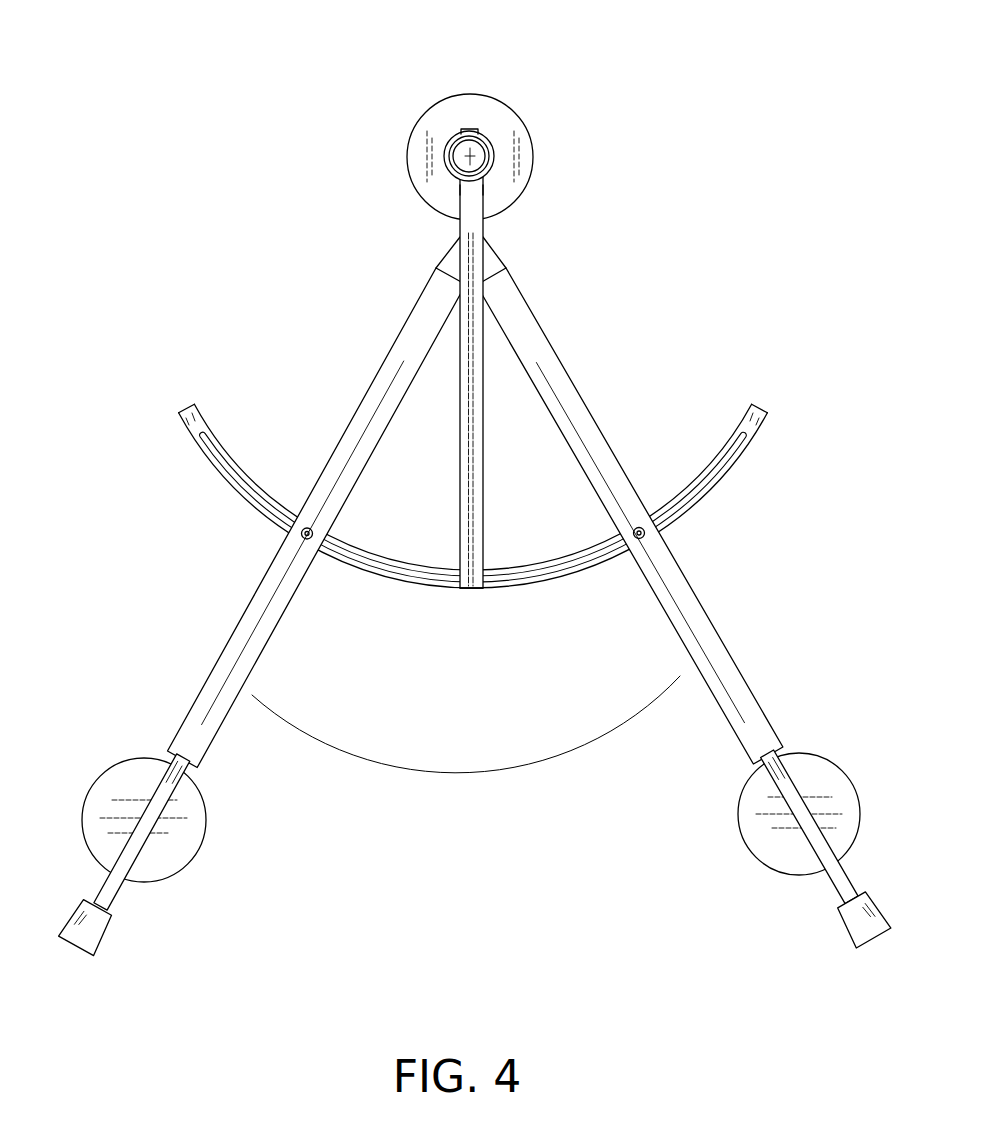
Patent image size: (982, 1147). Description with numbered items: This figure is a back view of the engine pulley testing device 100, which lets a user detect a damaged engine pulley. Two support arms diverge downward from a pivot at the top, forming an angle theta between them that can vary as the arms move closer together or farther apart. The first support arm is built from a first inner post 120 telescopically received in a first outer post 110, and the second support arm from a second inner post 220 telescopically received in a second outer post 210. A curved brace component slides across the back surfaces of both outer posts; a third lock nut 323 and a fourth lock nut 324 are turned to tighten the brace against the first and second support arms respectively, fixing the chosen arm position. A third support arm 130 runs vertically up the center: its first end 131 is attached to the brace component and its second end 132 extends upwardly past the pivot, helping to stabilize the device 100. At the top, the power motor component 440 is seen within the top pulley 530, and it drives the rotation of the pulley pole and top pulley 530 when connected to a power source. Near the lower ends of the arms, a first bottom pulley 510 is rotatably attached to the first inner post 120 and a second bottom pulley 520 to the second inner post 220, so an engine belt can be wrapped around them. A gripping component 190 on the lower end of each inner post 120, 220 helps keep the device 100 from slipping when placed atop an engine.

The engine pulley testing device 100 is at (724, 245).
The first outer post 110 is at (726, 650).
The first inner post 120 is at (824, 884).
The third support arm 130 is at (484, 458).
The first end of the third support arm 131 is at (472, 592).
The second end of the third support arm 132 is at (484, 193).
The gripping component 190 is at (96, 936).
The second outer post 210 is at (358, 408).
The second inner post 220 is at (186, 782).
The third lock nut 323 is at (648, 531).
The fourth lock nut 324 is at (300, 533).
The power motor component 440 is at (490, 151).
The first bottom pulley 510 is at (753, 853).
The second bottom pulley 520 is at (200, 853).
The top pulley 530 is at (486, 97).